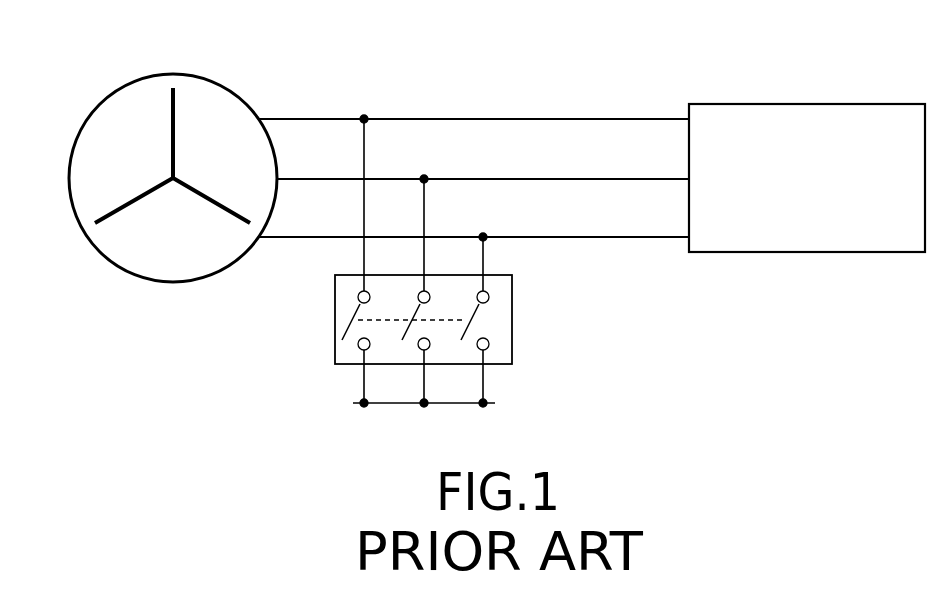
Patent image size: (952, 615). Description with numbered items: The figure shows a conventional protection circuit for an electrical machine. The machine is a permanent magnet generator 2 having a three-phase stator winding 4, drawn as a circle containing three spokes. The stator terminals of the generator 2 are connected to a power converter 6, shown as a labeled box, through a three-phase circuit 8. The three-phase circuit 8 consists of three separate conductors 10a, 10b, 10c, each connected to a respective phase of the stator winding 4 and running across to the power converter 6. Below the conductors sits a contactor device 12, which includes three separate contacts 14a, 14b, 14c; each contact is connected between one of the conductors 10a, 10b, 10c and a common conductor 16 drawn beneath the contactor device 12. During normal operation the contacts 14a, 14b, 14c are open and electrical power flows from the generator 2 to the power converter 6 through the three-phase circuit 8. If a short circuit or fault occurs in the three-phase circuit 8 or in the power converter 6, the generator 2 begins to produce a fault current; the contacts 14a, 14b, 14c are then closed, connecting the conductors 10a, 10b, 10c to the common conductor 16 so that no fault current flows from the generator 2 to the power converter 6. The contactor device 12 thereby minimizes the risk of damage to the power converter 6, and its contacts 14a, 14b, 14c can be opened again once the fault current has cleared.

The permanent magnet generator 2 is at (173, 80).
The three-phase stator winding 4 is at (165, 195).
The power converter 6 is at (808, 111).
The three-phase circuit 8 is at (452, 107).
The conductor 10a is at (599, 118).
The conductor 10b is at (542, 177).
The conductor 10c is at (600, 238).
The contactor device 12 is at (335, 320).
The contact 14a is at (368, 313).
The contact 14b is at (427, 313).
The contact 14c is at (487, 323).
The common conductor 16 is at (392, 405).